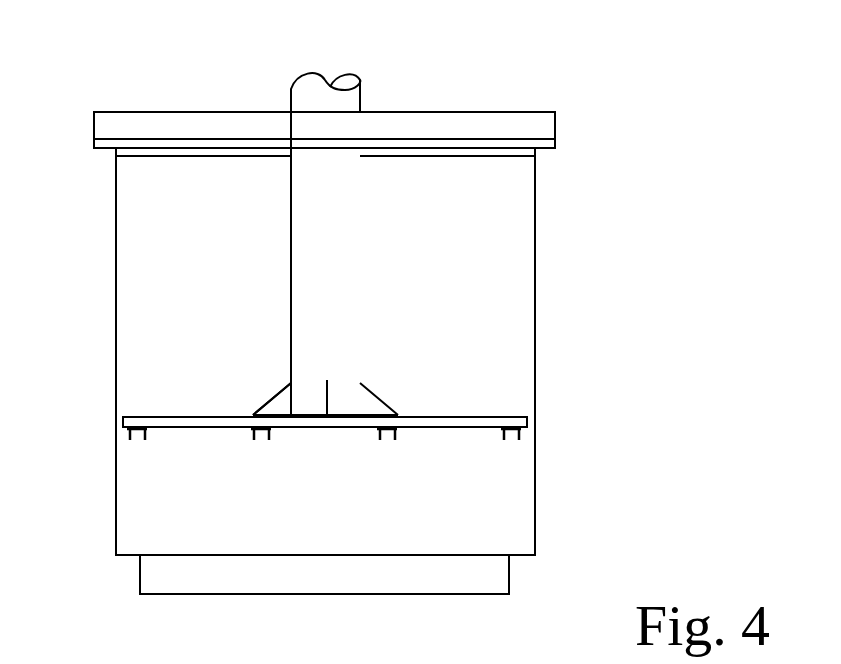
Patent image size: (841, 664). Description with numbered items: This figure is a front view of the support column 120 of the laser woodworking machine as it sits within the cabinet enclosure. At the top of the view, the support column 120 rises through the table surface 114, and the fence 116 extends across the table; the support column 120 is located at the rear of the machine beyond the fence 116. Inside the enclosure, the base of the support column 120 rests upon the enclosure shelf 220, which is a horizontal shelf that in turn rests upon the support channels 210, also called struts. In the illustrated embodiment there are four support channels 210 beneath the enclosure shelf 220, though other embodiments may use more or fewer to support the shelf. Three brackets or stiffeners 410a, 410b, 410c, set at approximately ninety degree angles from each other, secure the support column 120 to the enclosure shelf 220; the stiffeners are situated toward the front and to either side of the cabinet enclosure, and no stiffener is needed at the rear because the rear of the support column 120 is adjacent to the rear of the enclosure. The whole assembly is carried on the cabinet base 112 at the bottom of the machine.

The cabinet base 112 is at (510, 585).
The table surface 114 is at (556, 146).
The fence 116 is at (555, 112).
The support column 120 is at (349, 74).
The support channels 210 is at (132, 445).
The enclosure shelf 220 is at (528, 421).
The stiffener 410a is at (385, 400).
The stiffener 410b is at (329, 390).
The stiffener 410c is at (258, 397).